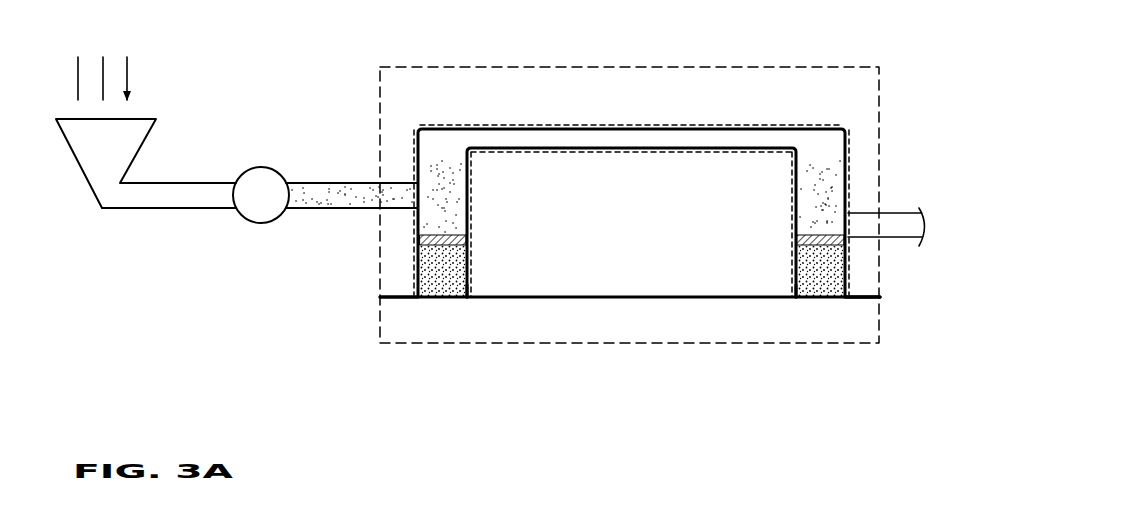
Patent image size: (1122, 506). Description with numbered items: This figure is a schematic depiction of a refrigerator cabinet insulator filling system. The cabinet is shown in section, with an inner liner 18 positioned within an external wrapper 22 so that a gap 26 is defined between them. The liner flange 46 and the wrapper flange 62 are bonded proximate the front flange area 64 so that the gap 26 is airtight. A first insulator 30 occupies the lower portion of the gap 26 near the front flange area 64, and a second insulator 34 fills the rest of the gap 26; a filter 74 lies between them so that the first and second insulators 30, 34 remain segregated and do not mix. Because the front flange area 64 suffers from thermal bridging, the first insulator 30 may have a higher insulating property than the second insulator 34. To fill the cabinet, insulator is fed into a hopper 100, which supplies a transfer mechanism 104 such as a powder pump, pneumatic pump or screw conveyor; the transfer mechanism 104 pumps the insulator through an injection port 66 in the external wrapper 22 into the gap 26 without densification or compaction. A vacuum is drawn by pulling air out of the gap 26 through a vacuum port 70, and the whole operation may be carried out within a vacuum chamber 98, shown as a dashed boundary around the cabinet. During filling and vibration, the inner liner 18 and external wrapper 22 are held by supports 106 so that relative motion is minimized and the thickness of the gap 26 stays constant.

The inner liner 18 is at (710, 154).
The external wrapper 22 is at (602, 122).
The gap 26 is at (453, 159).
The first insulator 30 is at (438, 282).
The second insulator 34 is at (827, 188).
The liner flange 46 is at (833, 300).
The wrapper flange 62 is at (878, 290).
The front flange area 64 is at (471, 303).
The injection port 66 is at (407, 192).
The vacuum port 70 is at (853, 228).
The filter 74 is at (470, 247).
The vacuum chamber 98 is at (495, 67).
The hopper 100 is at (85, 180).
The transfer mechanism 104 is at (260, 224).
The supports 106 is at (774, 185).